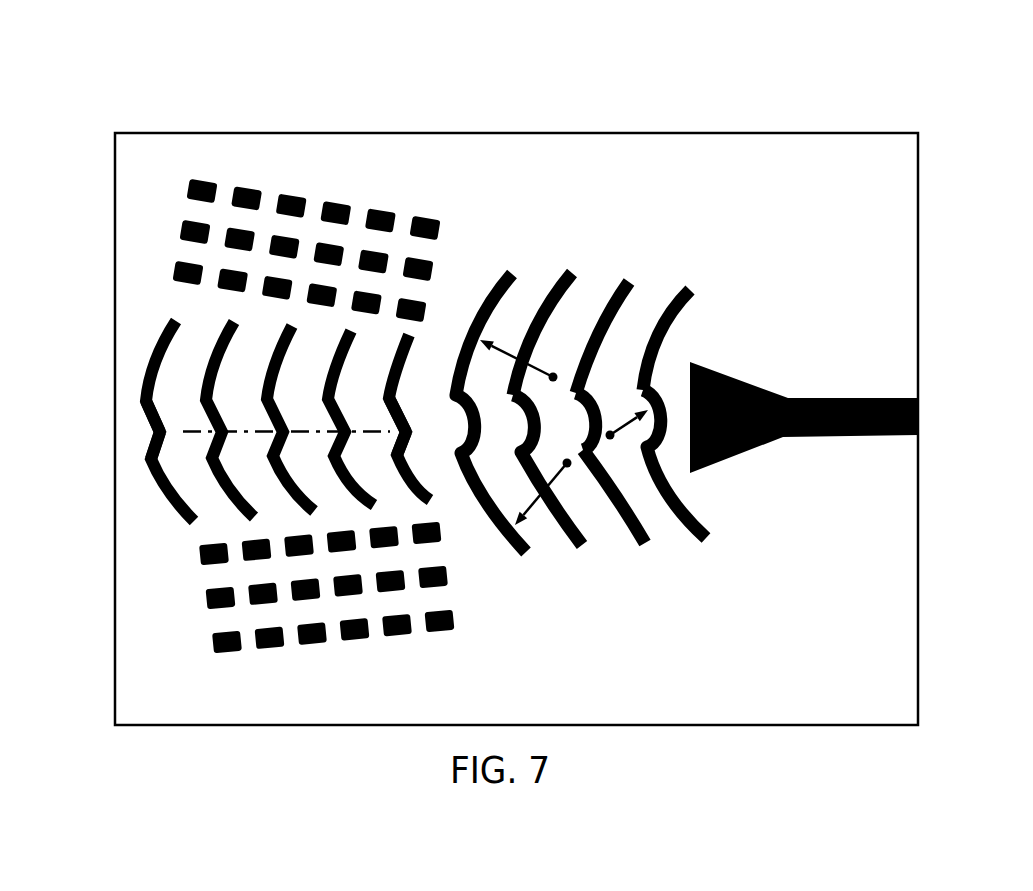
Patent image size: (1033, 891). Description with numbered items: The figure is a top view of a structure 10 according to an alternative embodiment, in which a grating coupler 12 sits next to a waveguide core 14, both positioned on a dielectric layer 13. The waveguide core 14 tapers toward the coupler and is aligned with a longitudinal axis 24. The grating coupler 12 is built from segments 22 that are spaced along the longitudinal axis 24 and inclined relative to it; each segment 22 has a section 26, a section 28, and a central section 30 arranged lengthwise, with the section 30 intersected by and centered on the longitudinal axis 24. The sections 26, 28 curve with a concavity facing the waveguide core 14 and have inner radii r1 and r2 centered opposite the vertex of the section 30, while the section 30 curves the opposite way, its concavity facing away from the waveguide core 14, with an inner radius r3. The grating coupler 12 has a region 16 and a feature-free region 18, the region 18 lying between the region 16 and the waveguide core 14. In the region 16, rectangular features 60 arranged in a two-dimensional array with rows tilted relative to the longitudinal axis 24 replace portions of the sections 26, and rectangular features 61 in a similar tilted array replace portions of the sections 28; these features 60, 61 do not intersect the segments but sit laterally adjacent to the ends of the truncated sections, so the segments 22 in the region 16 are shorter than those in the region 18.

The structure 10 is at (139, 120).
The grating coupler 12 is at (162, 214).
The dielectric layer 13 is at (877, 652).
The waveguide core 14 is at (835, 398).
The region 16 is at (433, 92).
The region 18 is at (705, 118).
The segments 22 is at (395, 527).
The longitudinal axis 24 is at (253, 430).
The section 26 is at (155, 347).
The section 28 is at (170, 505).
The section 30 is at (157, 435).
The features 60 is at (248, 237).
The features 61 is at (223, 605).
The inner radius r1 is at (519, 361).
The inner radius r2 is at (536, 492).
The inner radius r3 is at (625, 418).